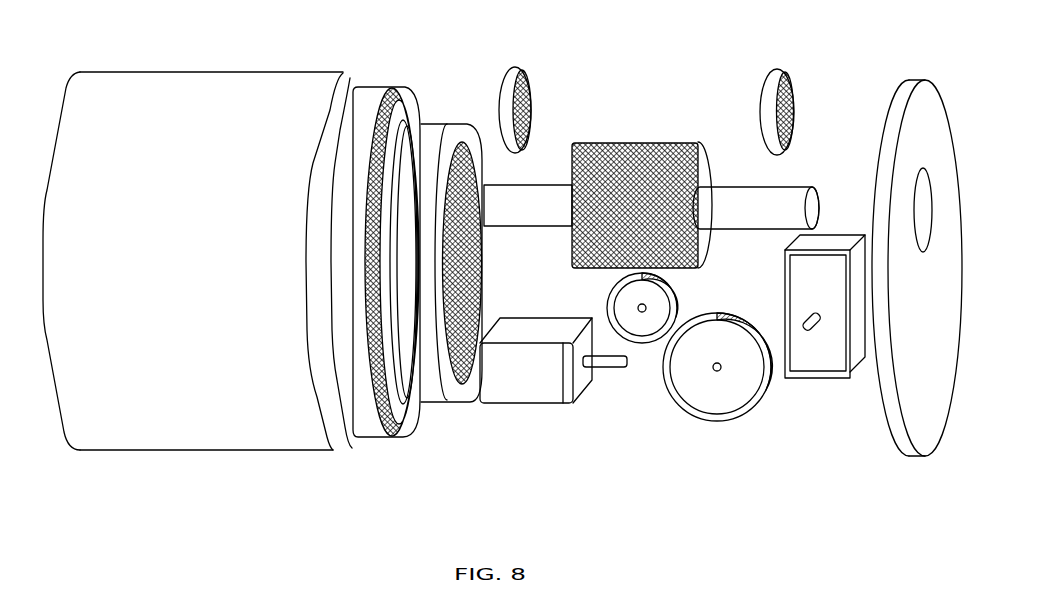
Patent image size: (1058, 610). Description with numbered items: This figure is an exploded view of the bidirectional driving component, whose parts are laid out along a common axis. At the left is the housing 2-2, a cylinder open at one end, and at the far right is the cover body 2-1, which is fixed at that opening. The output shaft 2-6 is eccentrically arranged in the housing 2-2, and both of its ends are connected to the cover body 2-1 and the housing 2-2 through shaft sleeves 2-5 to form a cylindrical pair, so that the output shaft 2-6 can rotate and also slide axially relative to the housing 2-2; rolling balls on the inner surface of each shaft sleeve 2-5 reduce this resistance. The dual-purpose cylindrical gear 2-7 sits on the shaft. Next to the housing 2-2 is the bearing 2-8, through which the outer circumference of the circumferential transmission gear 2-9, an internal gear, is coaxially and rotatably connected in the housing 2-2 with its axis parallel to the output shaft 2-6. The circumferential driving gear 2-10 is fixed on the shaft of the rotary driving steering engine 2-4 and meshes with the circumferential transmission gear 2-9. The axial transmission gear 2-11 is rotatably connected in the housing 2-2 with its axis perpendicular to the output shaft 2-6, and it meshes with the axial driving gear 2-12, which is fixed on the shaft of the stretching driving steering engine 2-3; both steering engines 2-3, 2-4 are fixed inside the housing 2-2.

The cover body 2-1 is at (912, 112).
The housing 2-2 is at (198, 88).
The stretching driving steering engine 2-3 is at (800, 355).
The rotary driving steering engine 2-4 is at (543, 387).
The shaft sleeve 2-5 is at (511, 75).
The output shaft 2-6 is at (552, 185).
The dual-purpose cylindrical gear 2-7 is at (645, 145).
The bearing 2-8 is at (360, 98).
The circumferential transmission gear 2-9 is at (422, 145).
The circumferential driving gear 2-10 is at (463, 378).
The axial transmission gear 2-11 is at (627, 327).
The axial driving gear 2-12 is at (715, 385).